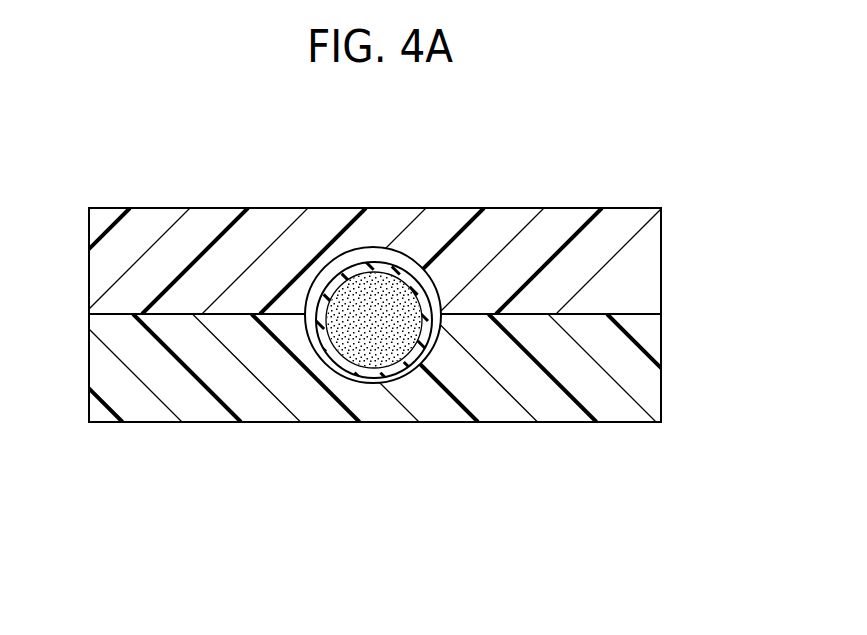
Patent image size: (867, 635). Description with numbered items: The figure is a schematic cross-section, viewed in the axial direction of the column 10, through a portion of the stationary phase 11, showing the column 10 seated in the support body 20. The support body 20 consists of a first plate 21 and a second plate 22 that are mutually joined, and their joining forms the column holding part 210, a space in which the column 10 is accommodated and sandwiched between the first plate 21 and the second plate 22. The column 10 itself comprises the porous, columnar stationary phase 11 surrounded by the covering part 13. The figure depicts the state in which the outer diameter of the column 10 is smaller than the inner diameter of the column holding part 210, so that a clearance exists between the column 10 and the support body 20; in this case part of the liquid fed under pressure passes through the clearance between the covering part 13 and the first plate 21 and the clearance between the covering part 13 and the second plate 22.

The column 10 is at (433, 296).
The stationary phase 11 is at (402, 298).
The covering part 13 is at (348, 265).
The column holding part 210 is at (382, 255).
The support body 20 is at (738, 252).
The first plate 21 is at (632, 266).
The second plate 22 is at (638, 335).